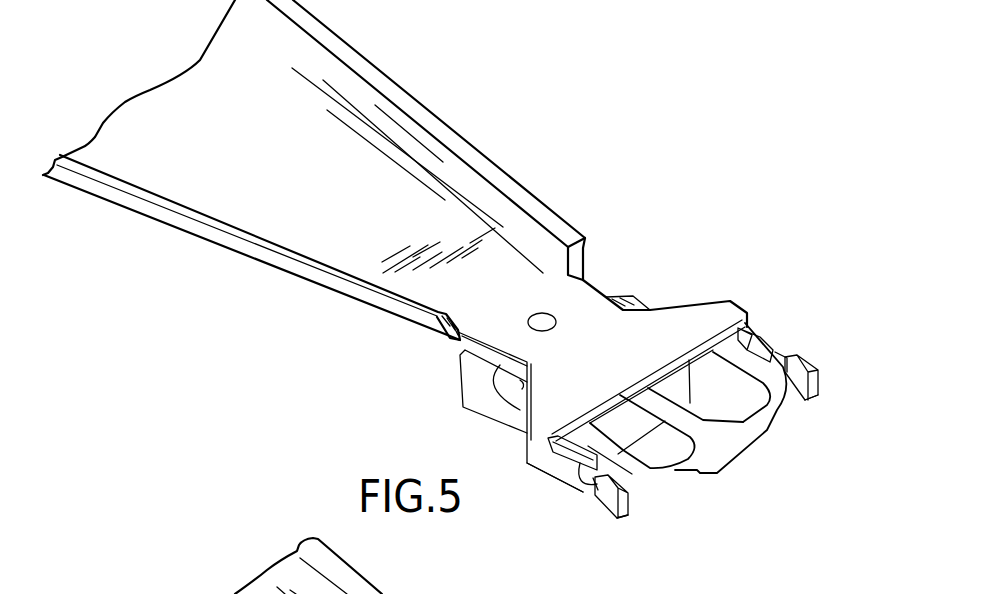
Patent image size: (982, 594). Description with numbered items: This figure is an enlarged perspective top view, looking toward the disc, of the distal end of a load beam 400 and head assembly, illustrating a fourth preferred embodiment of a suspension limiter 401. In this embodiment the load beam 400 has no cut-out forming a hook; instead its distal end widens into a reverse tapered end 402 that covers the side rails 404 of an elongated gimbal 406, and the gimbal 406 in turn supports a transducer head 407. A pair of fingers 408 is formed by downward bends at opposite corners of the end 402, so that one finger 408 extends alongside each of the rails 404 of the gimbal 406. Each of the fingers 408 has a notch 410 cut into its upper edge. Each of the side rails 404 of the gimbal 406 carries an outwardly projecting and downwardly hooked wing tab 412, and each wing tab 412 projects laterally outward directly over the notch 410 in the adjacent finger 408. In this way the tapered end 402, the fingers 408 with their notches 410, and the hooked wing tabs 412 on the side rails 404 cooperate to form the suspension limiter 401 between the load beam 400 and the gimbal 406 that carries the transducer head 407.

The load beam 400 is at (486, 195).
The suspension limiter 401 is at (547, 485).
The reverse tapered end 402 is at (693, 313).
The side rails 404 is at (748, 333).
The elongated gimbal 406 is at (766, 426).
The transducer head 407 is at (473, 397).
The fingers 408 is at (813, 397).
The notch 410 is at (780, 355).
The wing tab 412 is at (790, 360).